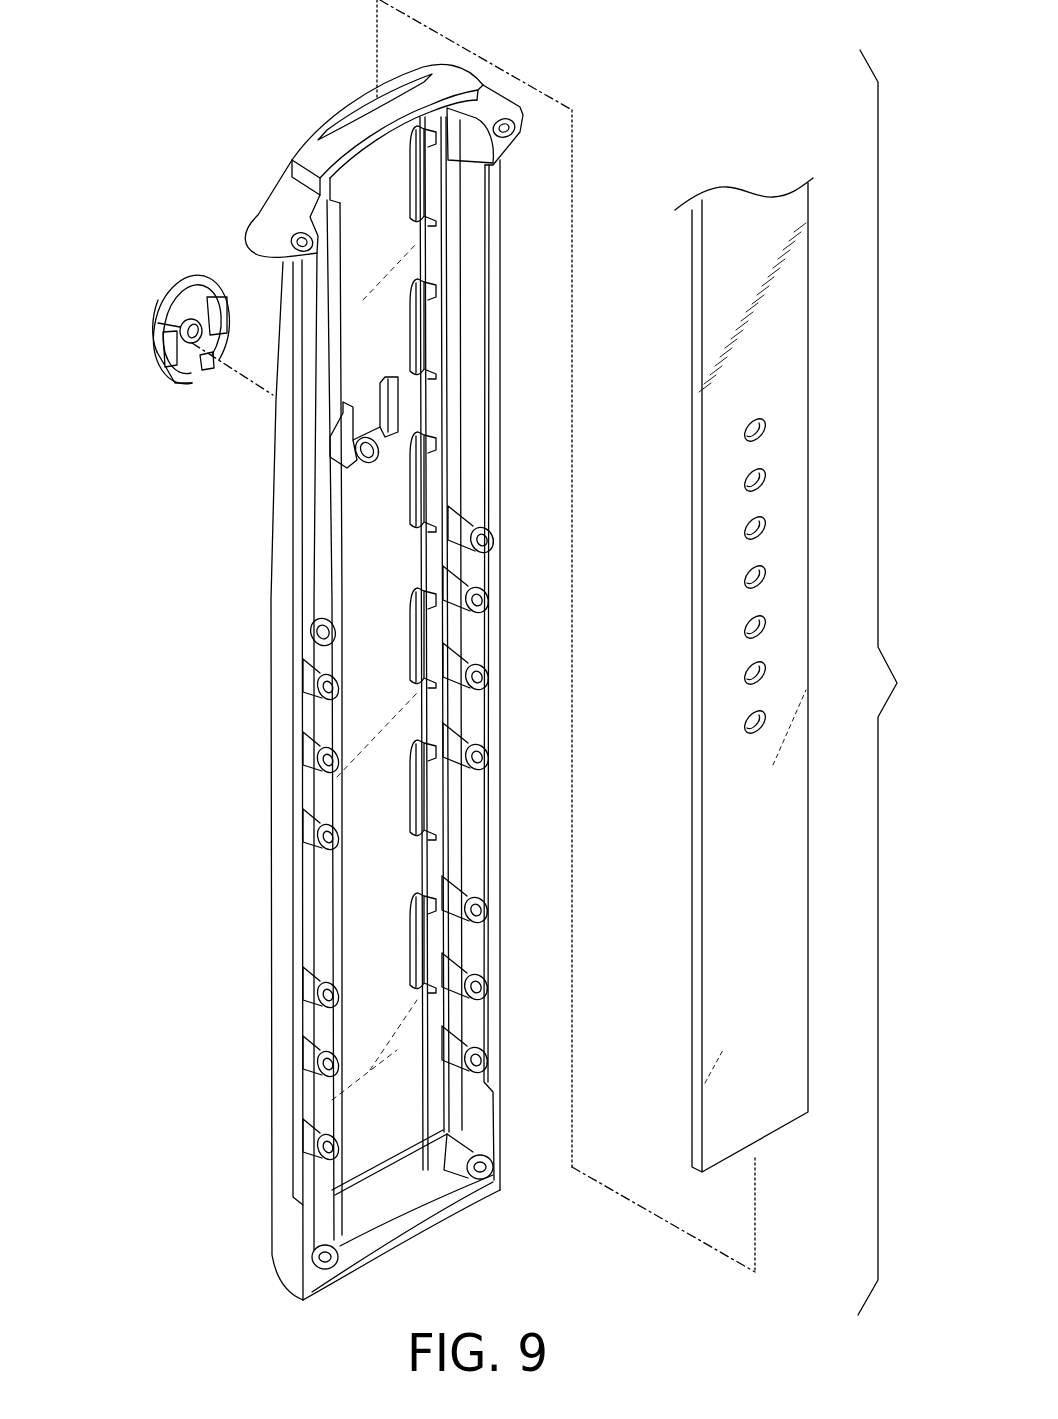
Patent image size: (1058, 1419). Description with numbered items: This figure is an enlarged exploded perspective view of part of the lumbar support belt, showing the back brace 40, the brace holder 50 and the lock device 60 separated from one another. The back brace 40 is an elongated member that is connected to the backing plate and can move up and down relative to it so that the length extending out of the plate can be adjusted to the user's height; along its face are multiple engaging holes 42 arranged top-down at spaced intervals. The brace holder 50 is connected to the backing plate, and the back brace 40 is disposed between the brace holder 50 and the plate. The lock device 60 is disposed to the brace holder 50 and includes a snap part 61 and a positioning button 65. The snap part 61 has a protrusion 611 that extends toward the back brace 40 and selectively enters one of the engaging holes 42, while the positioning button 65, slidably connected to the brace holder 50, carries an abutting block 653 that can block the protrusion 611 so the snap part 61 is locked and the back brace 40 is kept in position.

The back brace 40 is at (676, 406).
The engaging holes 42 is at (752, 540).
The brace holder 50 is at (256, 787).
The lock device 60 is at (138, 312).
The snap part 61 is at (377, 470).
The protrusion 611 is at (365, 453).
The positioning button 65 is at (164, 385).
The abutting block 653 is at (187, 320).